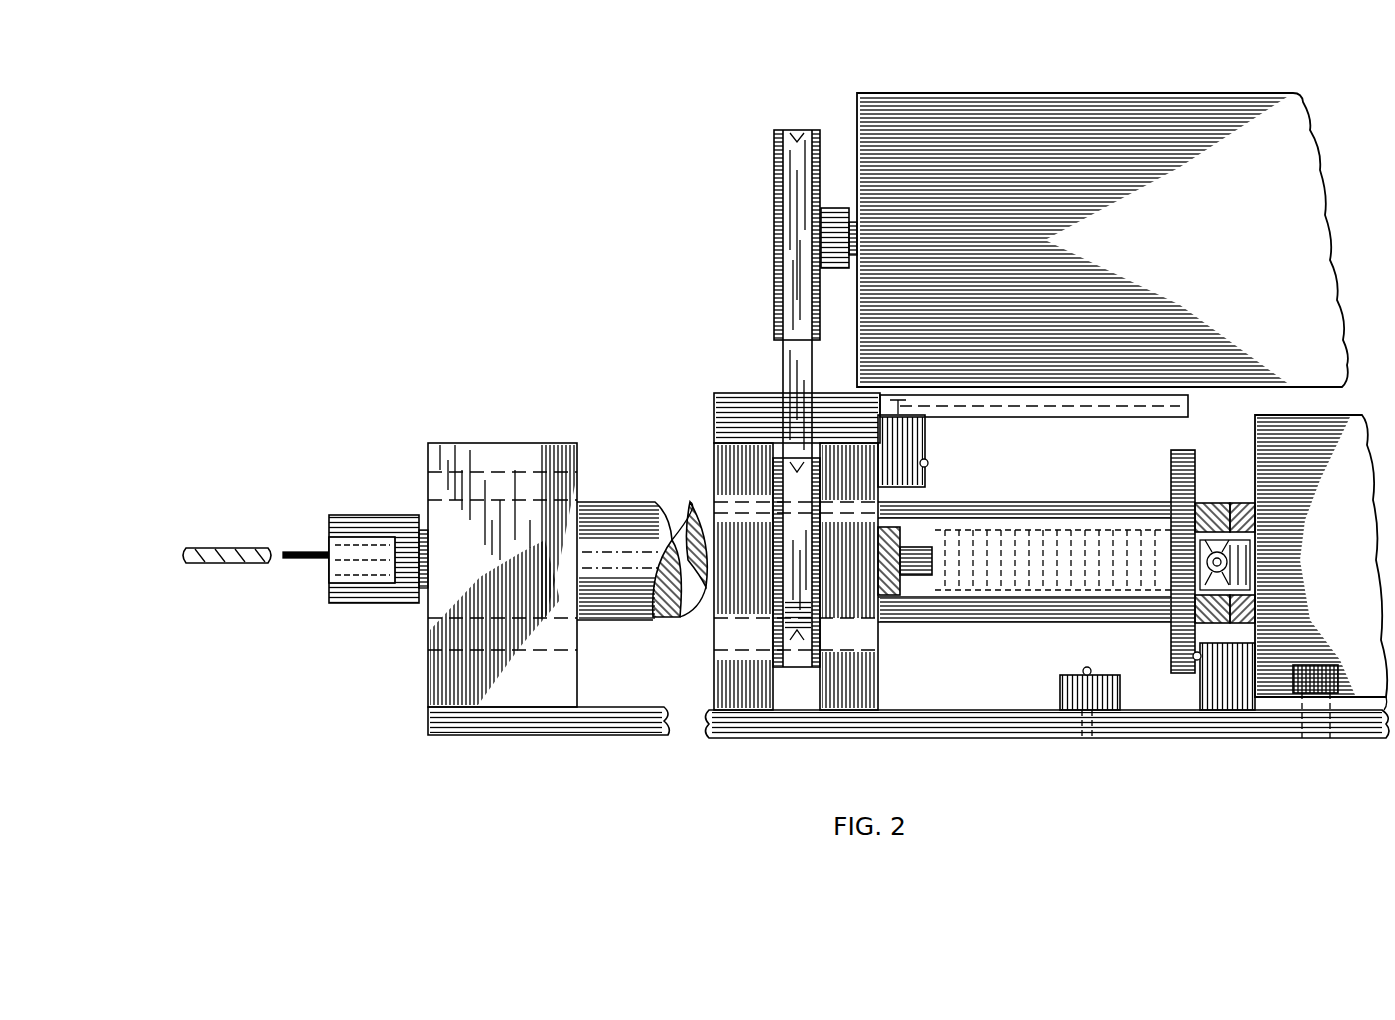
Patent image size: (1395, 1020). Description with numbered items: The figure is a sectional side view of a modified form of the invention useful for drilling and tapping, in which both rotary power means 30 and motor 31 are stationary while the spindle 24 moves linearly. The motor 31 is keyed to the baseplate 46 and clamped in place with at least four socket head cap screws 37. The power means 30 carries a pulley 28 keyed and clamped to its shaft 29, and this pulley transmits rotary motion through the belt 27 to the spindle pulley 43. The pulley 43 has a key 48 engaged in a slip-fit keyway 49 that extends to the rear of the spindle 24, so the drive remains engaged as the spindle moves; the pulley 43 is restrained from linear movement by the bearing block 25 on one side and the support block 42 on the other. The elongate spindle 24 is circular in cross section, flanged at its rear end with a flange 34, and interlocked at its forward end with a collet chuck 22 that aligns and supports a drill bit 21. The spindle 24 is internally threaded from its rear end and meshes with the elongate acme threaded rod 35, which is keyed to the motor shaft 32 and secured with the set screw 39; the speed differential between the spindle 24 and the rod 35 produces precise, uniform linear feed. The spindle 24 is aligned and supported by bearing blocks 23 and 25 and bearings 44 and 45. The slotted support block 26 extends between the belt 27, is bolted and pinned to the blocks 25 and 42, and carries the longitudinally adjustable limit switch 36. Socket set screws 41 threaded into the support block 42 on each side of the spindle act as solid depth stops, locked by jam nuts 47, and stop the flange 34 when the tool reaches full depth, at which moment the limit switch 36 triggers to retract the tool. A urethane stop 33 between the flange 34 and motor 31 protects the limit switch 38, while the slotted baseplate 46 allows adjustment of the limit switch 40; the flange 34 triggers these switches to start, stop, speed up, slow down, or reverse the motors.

The drill bit 21 is at (191, 548).
The collet chuck 22 is at (350, 515).
The bearing block 23 is at (450, 443).
The spindle 24 is at (599, 502).
The bearing block 25 is at (714, 463).
The support block 26 is at (714, 413).
The belt 27 is at (783, 373).
The pulley 28 is at (775, 148).
The shaft 29 is at (853, 225).
The power means 30 is at (1308, 112).
The motor 31 is at (1333, 415).
The motor shaft 32 is at (1243, 503).
The urethane stop 33 is at (1212, 503).
The flange 34 is at (1173, 480).
The acme threaded rod 35 is at (1010, 530).
The limit switch 36 is at (928, 463).
The socket head cap screws 37 is at (1293, 680).
The limit switch 38 is at (1200, 688).
The set screw 39 is at (1197, 590).
The limit switch 40 is at (1085, 668).
The socket set screw 41 is at (920, 577).
The support block 42 is at (880, 688).
The spindle pulley 43 is at (777, 652).
The bearing 44 is at (523, 652).
The bearing 45 is at (730, 648).
The baseplate 46 is at (447, 737).
The jam nuts 47 is at (883, 592).
The key 48 is at (783, 487).
The keyway 49 is at (747, 513).